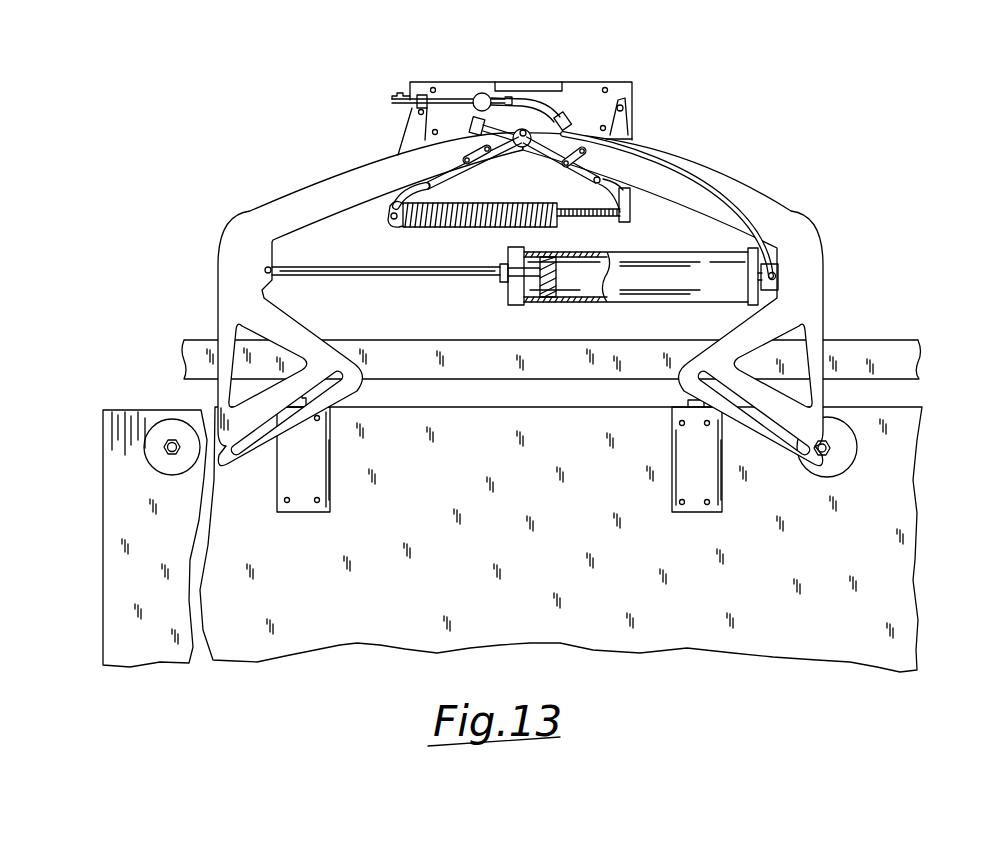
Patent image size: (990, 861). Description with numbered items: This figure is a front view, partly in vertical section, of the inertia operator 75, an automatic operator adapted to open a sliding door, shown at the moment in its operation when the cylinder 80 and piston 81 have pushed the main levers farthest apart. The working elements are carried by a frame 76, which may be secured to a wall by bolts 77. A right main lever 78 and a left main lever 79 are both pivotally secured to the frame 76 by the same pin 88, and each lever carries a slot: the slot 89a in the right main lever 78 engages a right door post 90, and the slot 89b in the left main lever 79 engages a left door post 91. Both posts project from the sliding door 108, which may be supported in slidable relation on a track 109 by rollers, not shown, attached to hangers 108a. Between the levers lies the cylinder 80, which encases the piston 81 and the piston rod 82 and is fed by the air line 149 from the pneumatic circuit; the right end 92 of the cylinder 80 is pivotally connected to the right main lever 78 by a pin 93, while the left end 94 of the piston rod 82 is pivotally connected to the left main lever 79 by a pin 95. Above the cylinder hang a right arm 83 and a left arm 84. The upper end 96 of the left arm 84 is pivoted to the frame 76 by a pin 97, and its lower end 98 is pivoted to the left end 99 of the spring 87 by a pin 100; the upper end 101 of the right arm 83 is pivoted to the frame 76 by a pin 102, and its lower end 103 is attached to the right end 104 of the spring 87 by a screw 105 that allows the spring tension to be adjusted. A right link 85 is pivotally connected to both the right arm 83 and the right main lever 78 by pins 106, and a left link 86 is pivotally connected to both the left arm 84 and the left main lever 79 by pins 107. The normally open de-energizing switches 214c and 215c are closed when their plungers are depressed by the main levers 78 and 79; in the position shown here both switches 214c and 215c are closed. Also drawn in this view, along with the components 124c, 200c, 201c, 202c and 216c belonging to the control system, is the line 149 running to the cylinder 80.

The inertia operator 75 is at (546, 316).
The frame 76 is at (633, 88).
The bolts 77 is at (433, 87).
The right main lever 78 is at (767, 196).
The left main lever 79 is at (333, 176).
The cylinder 80 is at (673, 303).
The piston 81 is at (577, 298).
The piston rod 82 is at (367, 277).
The right arm 83 is at (633, 137).
The left arm 84 is at (406, 147).
The right link 85 is at (583, 168).
The left link 86 is at (446, 182).
The spring 87 is at (470, 228).
The pin 88 is at (525, 109).
The slot 89a is at (790, 437).
The slot 89b is at (219, 455).
The right door post 90 is at (830, 453).
The left door post 91 is at (164, 447).
The right end of the cylinder 92 is at (752, 304).
The pin 93 is at (779, 277).
The left end of the piston rod 94 is at (308, 277).
The pin 95 is at (265, 265).
The upper end of the left arm 96 is at (410, 96).
The pin 97 is at (421, 94).
The lower end of the left arm 98 is at (388, 208).
The left end of the spring 99 is at (418, 228).
The pin 100 is at (390, 214).
The upper end of the right arm 101 is at (628, 113).
The pin 102 is at (624, 104).
The lower end of the right arm 103 is at (631, 210).
The right end of the spring 104 is at (565, 219).
The screw 105 is at (604, 219).
The pins 106 is at (595, 178).
The pins 107 is at (462, 157).
The sliding door 108 is at (102, 487).
The hangers 108a is at (308, 398).
The track 109 is at (195, 338).
The slot 124c is at (463, 97).
The line 149 is at (692, 164).
The roller 200c is at (482, 93).
The guide bar 201c is at (478, 96).
The fitting 202c is at (492, 96).
The de-energizing switch 214c is at (565, 116).
The de-energizing switch 215c is at (471, 125).
The roller pivot 216c is at (523, 147).